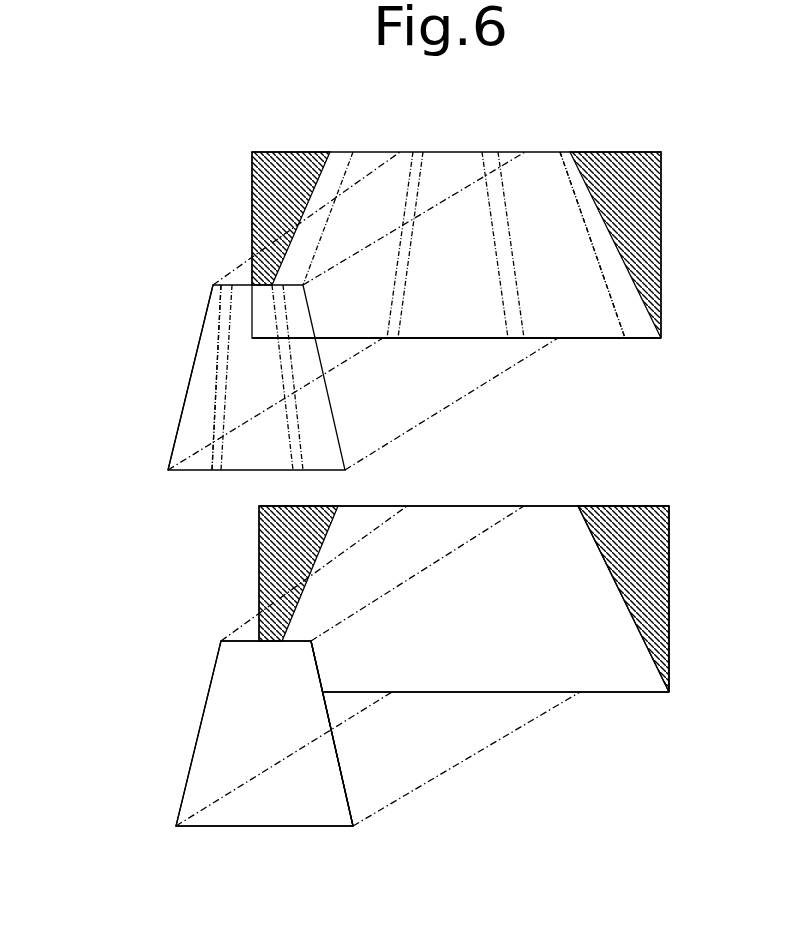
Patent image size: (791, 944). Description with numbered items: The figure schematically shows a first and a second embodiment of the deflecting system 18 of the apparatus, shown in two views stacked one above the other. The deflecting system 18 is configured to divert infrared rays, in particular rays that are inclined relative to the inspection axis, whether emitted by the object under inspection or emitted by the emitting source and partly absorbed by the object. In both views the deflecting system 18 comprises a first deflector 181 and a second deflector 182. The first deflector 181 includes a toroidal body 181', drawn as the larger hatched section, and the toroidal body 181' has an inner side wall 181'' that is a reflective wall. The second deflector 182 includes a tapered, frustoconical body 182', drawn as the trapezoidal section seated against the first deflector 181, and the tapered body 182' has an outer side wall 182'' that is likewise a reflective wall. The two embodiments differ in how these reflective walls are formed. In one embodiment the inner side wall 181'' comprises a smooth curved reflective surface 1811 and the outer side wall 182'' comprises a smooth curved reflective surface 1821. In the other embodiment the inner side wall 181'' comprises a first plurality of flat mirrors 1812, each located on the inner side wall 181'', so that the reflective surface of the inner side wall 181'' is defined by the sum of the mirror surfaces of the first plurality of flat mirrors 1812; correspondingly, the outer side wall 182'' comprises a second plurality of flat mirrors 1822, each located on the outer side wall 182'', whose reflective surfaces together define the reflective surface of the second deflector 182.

The deflecting system 18 is at (596, 139).
The first deflector 181 is at (467, 489).
The toroidal body 181' is at (666, 422).
The inner side wall 181'' is at (720, 599).
The smooth curved reflective surface 1811 is at (560, 583).
The first plurality of flat mirrors 1812 is at (588, 328).
The second deflector 182 is at (187, 581).
The tapered body 182' is at (197, 548).
The outer side wall 182'' is at (412, 761).
The smooth curved reflective surface 1821 is at (217, 756).
The second plurality of flat mirrors 1822 is at (205, 404).